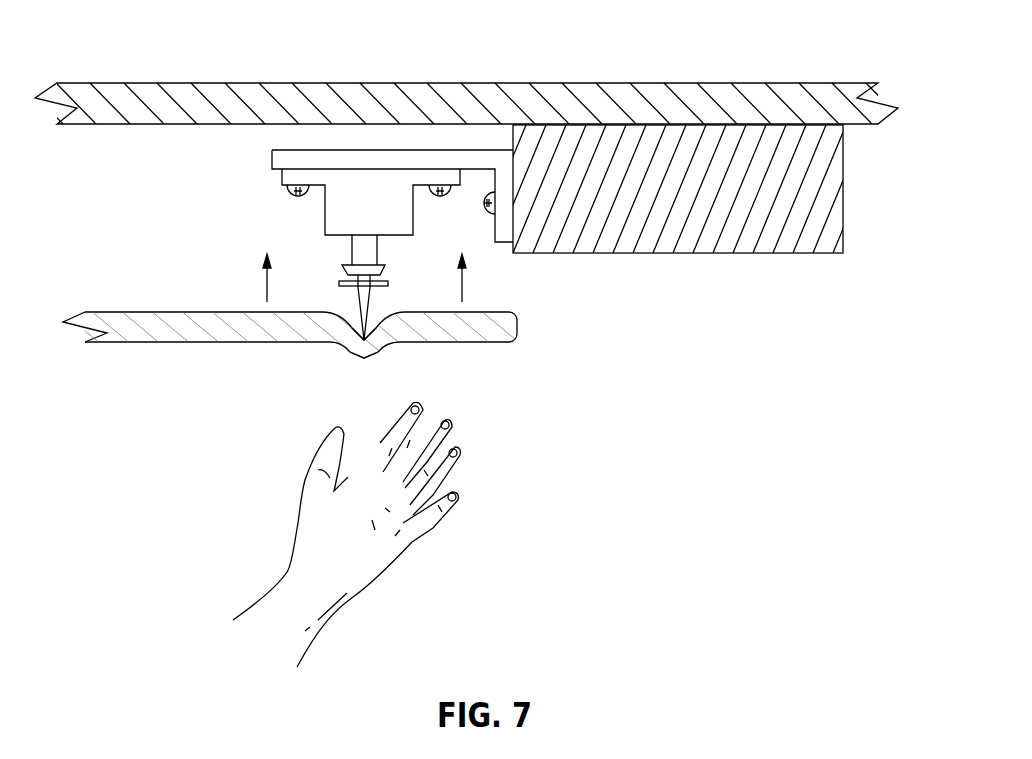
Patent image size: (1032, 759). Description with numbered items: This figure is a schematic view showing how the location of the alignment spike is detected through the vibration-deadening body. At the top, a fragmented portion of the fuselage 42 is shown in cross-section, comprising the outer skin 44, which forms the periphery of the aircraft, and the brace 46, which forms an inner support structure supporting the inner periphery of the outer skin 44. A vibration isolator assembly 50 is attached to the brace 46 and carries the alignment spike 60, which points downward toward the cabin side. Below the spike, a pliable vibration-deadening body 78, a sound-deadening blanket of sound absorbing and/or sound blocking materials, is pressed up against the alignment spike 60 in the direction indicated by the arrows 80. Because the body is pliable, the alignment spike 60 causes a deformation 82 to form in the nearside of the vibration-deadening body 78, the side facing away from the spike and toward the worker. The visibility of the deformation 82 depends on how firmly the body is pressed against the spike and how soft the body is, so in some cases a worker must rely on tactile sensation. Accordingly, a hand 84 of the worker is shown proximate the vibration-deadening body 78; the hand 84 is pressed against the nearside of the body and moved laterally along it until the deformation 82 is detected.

The fuselage 42 is at (115, 50).
The outer skin 44 is at (661, 83).
The brace 46 is at (843, 189).
The vibration isolator assembly 50 is at (312, 204).
The alignment spike 60 is at (358, 312).
The vibration-deadening body 78 is at (233, 343).
The arrows 80 is at (262, 270).
The deformation 82 is at (365, 358).
The hand 84 is at (300, 504).